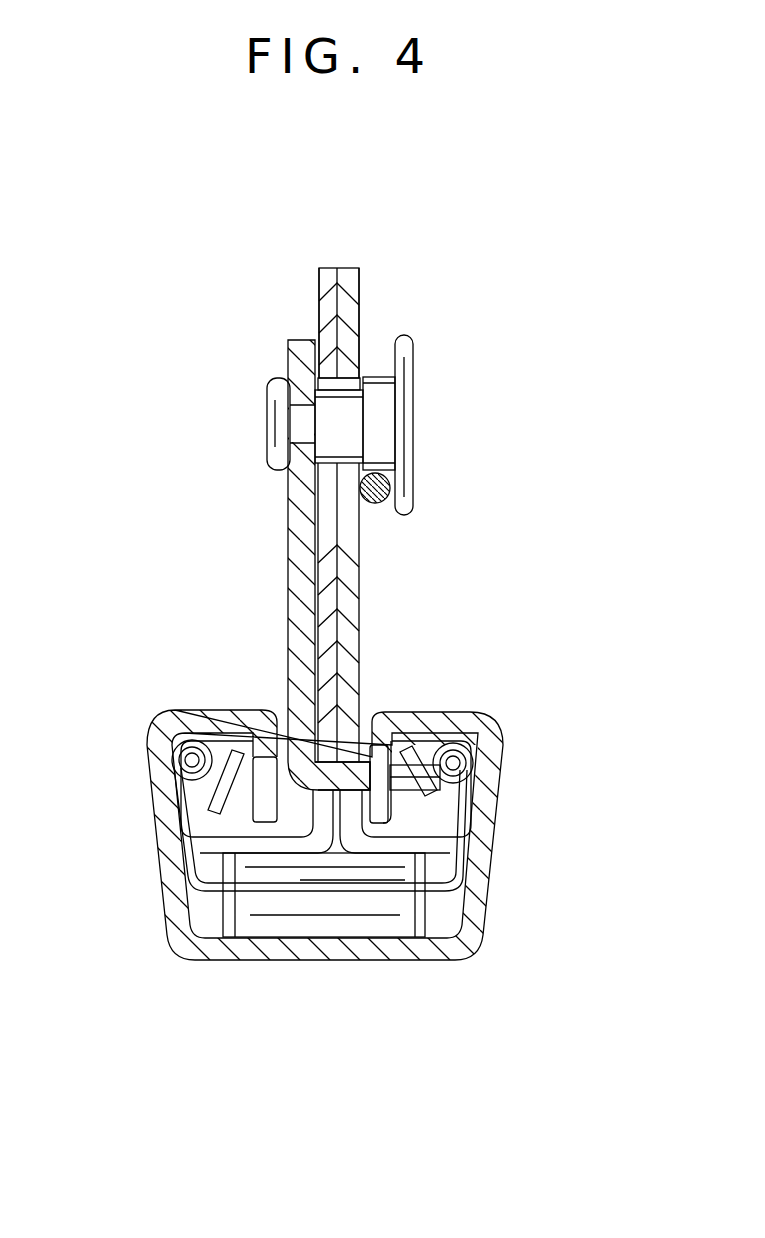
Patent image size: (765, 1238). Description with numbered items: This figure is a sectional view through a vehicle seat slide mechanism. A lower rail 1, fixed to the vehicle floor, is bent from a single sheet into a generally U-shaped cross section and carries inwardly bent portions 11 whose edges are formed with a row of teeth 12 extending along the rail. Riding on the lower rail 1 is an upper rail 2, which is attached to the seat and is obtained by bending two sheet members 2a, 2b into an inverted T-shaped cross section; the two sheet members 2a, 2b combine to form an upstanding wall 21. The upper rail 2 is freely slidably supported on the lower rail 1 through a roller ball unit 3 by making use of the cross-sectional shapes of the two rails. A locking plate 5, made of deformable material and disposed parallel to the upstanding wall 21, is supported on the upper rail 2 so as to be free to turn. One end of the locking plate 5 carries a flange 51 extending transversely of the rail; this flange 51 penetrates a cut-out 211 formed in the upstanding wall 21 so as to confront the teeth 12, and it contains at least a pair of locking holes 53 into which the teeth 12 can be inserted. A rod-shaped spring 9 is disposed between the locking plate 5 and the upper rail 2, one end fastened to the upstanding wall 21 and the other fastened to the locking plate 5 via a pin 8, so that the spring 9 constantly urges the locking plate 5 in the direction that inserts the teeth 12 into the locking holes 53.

The lower rail 1 is at (329, 975).
The upper rail 2 is at (342, 259).
The sheet member 2a is at (325, 307).
The sheet member 2b is at (350, 313).
The roller ball unit 3 is at (440, 911).
The locking plate 5 is at (275, 569).
The pin 8 is at (380, 432).
The rod-shaped spring 9 is at (390, 489).
The inwardly bent portion 11 is at (178, 723).
The teeth 12 is at (382, 810).
The upstanding wall 21 is at (340, 580).
The cut-out 211 is at (300, 745).
The flange 51 is at (452, 768).
The locking hole 53 is at (378, 740).